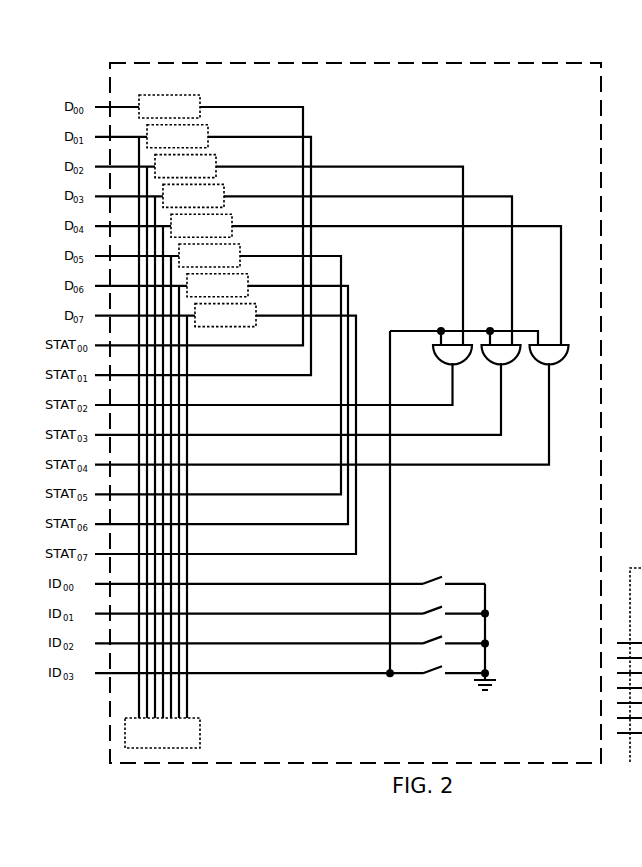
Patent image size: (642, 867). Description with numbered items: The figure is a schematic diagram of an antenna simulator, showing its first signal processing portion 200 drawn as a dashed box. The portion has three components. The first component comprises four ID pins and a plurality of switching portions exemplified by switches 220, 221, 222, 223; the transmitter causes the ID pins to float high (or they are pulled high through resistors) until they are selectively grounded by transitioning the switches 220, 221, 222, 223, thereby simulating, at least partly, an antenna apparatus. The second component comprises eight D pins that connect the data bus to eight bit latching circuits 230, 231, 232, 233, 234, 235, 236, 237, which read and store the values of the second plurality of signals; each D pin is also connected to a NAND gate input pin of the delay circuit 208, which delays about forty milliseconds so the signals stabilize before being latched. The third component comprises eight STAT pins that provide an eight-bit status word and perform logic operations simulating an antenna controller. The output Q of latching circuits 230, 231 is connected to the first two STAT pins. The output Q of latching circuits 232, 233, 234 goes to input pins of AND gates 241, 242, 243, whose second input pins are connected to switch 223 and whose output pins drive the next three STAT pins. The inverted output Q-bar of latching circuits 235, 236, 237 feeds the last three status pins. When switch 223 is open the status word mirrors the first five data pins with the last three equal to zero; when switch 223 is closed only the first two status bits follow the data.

The first signal processing portion 200 is at (598, 84).
The delay circuit 208 is at (198, 719).
The switch 220 is at (437, 579).
The switch 221 is at (437, 609).
The switch 222 is at (437, 638).
The switch 223 is at (437, 668).
The bit latching circuit 230 is at (201, 99).
The bit latching circuit 231 is at (209, 129).
The bit latching circuit 232 is at (217, 159).
The bit latching circuit 233 is at (225, 188).
The bit latching circuit 234 is at (233, 218).
The bit latching circuit 235 is at (241, 248).
The bit latching circuit 236 is at (249, 278).
The bit latching circuit 237 is at (257, 308).
The AND gate 241 is at (466, 361).
The AND gate 242 is at (515, 361).
The AND gate 243 is at (563, 361).